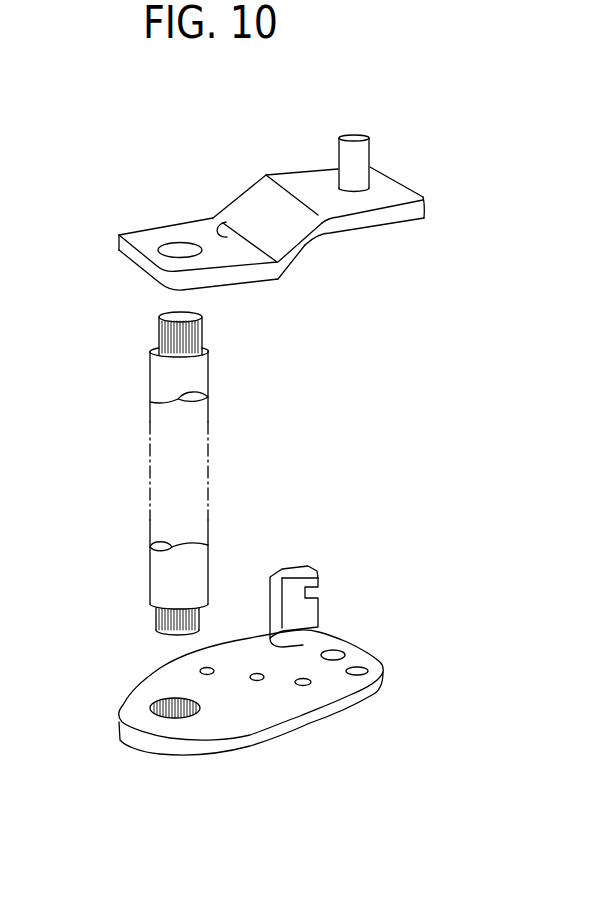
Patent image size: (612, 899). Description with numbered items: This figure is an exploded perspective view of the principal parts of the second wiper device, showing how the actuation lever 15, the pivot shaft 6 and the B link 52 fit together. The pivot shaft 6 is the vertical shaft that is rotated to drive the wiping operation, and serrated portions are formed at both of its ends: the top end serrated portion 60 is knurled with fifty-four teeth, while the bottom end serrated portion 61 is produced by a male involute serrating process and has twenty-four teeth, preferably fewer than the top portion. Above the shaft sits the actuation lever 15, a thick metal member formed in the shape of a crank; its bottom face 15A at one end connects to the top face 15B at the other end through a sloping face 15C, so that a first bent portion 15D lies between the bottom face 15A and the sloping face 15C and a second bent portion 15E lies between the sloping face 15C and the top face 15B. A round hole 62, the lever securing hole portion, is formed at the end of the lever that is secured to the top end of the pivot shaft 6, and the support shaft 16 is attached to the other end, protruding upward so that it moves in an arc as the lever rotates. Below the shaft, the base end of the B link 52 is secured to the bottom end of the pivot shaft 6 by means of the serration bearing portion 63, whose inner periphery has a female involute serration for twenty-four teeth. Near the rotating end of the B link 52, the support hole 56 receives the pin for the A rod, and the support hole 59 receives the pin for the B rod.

The actuation lever 15 is at (290, 187).
The bottom face 15A is at (147, 242).
The top face 15B is at (406, 197).
The sloping face 15C is at (253, 208).
The first bent portion 15D is at (212, 222).
The second bent portion 15E is at (295, 190).
The support shaft 16 is at (360, 157).
The round hole 62 is at (172, 248).
The pivot shaft 6 is at (170, 475).
The top end serrated portion 60 is at (203, 330).
The bottom end serrated portion 61 is at (156, 617).
The B link 52 is at (250, 656).
The support hole 59 is at (337, 652).
The support hole 56 is at (360, 672).
The serration bearing portion 63 is at (152, 707).